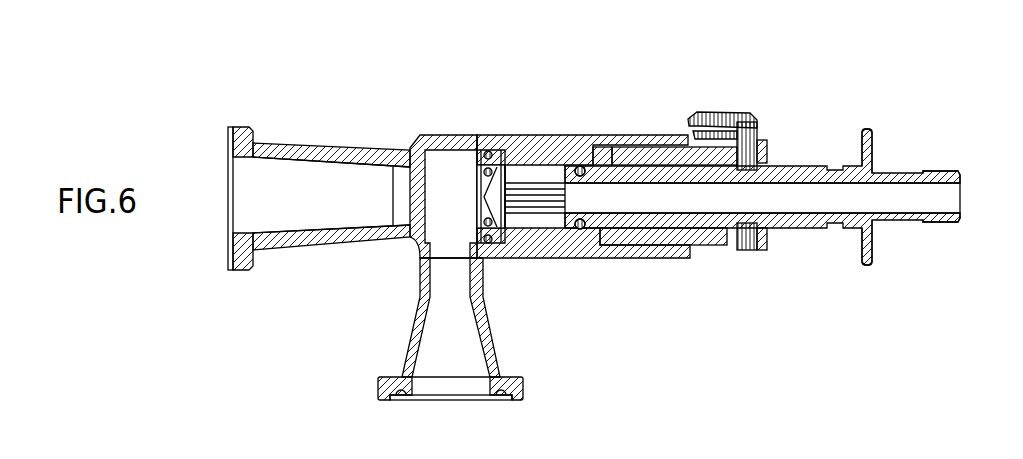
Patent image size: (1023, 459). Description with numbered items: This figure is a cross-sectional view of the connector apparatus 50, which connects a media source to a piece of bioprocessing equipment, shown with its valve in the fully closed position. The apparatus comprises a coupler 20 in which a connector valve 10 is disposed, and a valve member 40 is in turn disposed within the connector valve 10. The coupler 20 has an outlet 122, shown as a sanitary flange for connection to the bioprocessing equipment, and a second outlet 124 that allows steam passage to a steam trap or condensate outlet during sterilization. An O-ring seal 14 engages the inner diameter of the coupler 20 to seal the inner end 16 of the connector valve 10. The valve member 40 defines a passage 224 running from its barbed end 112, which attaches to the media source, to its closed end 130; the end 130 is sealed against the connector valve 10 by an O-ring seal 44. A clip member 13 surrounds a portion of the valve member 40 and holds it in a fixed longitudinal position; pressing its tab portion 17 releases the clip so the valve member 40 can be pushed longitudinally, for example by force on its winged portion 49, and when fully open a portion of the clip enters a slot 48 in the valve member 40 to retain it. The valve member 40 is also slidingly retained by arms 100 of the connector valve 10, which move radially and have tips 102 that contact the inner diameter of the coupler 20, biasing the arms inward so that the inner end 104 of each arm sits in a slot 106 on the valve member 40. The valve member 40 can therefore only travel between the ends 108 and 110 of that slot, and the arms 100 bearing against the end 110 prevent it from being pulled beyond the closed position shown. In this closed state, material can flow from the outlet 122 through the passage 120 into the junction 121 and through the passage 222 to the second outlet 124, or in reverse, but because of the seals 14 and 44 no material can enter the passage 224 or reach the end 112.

The connector valve 10 is at (668, 245).
The clip member 13 is at (752, 122).
The O-ring seal 14 is at (503, 252).
The inner end of the connector valve 16 is at (481, 248).
The tab portion 17 is at (718, 116).
The coupler 20 is at (305, 245).
The valve member 40 is at (807, 165).
The O-ring seal 44 is at (468, 152).
The slot 48 is at (837, 229).
The winged portion 49 is at (868, 130).
The connector apparatus 50 is at (850, 70).
The arms 100 is at (606, 150).
The tips 102 is at (620, 150).
The inner end of arm 104 is at (582, 165).
The slot 106 is at (690, 240).
The end of the slot 108 is at (725, 245).
The end of the slot 110 is at (592, 229).
The end of the valve member 112 is at (924, 223).
The passage 120 is at (468, 364).
The junction 121 is at (470, 209).
The outlet 122 is at (483, 400).
The second outlet 124 is at (236, 128).
The end of the valve member 130 is at (508, 182).
The passage 222 is at (350, 204).
The passage 224 is at (792, 204).